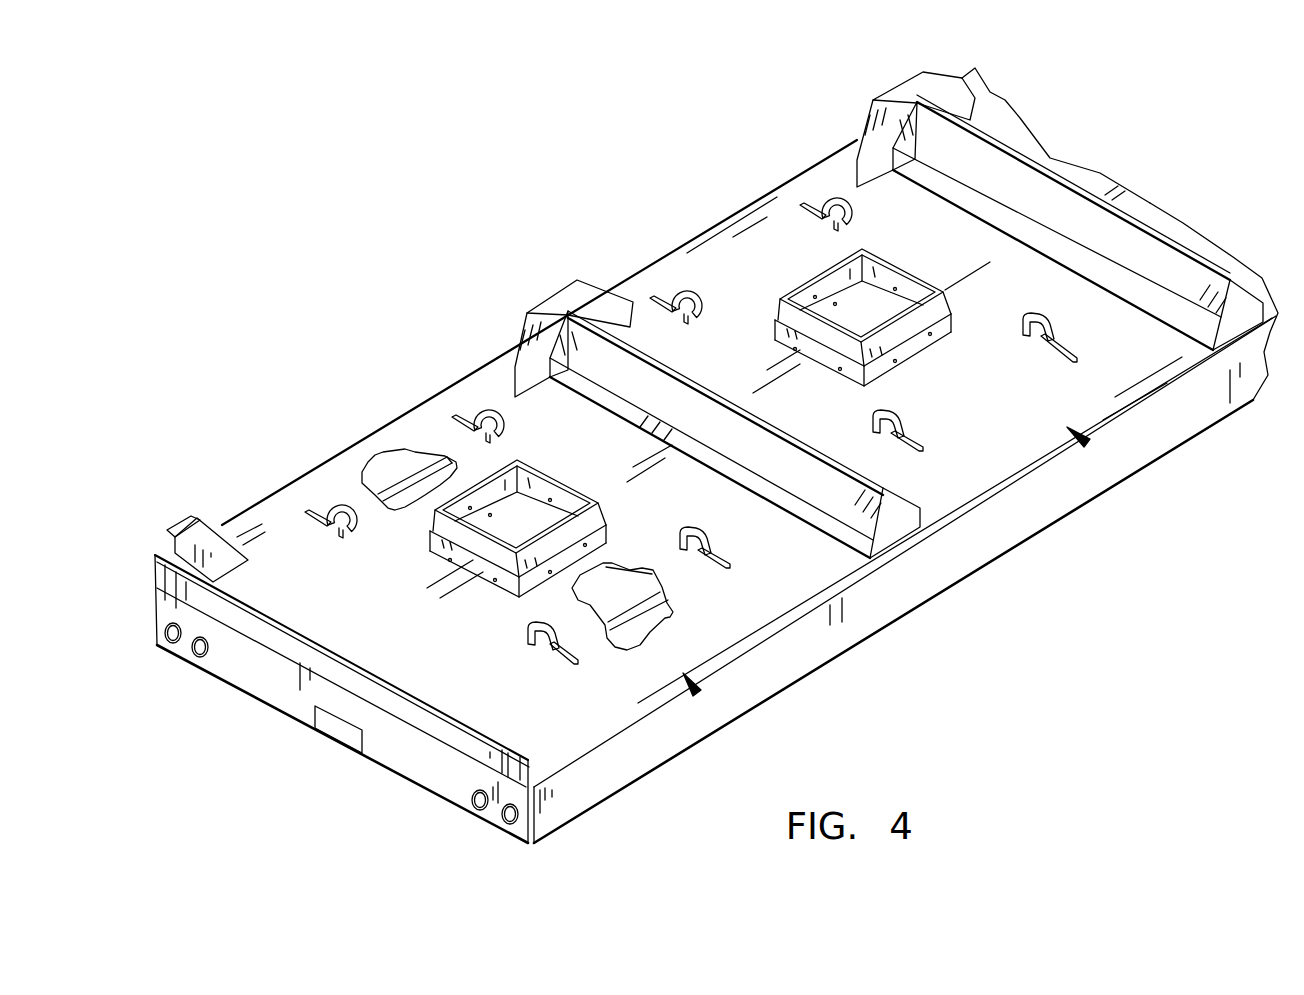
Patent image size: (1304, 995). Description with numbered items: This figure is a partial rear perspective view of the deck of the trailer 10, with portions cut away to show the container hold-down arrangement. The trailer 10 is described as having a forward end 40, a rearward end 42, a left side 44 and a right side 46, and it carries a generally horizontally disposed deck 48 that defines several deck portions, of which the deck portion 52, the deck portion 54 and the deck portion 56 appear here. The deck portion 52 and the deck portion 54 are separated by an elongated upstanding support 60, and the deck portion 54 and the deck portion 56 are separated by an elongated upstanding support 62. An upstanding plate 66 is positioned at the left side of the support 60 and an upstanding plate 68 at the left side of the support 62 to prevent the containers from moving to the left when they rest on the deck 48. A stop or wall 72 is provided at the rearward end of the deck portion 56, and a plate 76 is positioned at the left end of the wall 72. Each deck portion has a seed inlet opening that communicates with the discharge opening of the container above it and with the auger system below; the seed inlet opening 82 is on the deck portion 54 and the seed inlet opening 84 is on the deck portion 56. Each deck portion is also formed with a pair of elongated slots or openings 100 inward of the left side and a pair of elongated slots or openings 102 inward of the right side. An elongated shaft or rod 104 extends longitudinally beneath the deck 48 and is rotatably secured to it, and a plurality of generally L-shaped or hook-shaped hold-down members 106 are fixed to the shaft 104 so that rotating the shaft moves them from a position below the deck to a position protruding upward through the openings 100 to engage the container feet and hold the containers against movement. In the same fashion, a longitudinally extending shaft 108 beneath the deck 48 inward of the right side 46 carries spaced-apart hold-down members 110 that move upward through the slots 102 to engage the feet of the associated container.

The trailer 10 is at (655, 190).
The forward end 40 is at (1140, 152).
The rearward end 42 is at (380, 783).
The left side 44 is at (415, 397).
The right side 46 is at (930, 620).
The deck 48 is at (697, 693).
The deck portion 52 is at (1155, 215).
The deck portion 54 is at (958, 405).
The deck portion 56 is at (420, 663).
The elongated upstanding support 60 is at (1015, 192).
The elongated upstanding support 62 is at (675, 418).
The upstanding plate 66 is at (935, 90).
The upstanding plate 68 is at (565, 303).
The stop or wall 72 is at (285, 637).
The plate 76 is at (197, 533).
The seed inlet opening 82 is at (905, 290).
The seed inlet opening 84 is at (545, 512).
The elongated slots or openings 100 is at (546, 360).
The elongated slots or openings 102 is at (925, 448).
The elongated shaft or rod 104 is at (417, 460).
The hold-down members 106 is at (490, 408).
The shaft 108 is at (637, 610).
The hold-down members 110 is at (1053, 327).